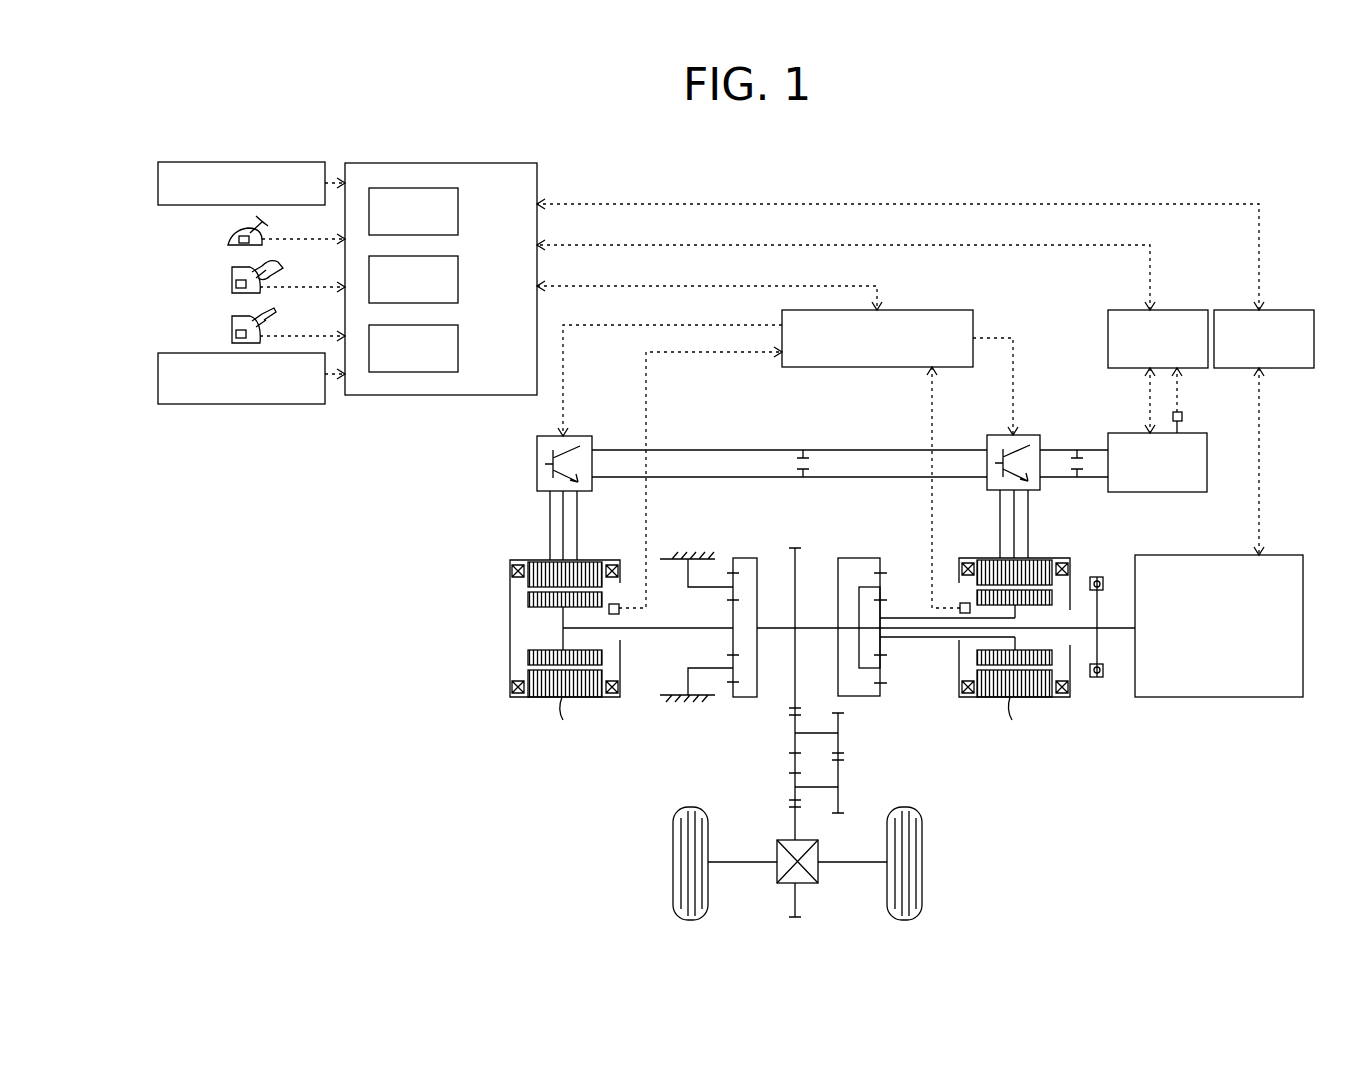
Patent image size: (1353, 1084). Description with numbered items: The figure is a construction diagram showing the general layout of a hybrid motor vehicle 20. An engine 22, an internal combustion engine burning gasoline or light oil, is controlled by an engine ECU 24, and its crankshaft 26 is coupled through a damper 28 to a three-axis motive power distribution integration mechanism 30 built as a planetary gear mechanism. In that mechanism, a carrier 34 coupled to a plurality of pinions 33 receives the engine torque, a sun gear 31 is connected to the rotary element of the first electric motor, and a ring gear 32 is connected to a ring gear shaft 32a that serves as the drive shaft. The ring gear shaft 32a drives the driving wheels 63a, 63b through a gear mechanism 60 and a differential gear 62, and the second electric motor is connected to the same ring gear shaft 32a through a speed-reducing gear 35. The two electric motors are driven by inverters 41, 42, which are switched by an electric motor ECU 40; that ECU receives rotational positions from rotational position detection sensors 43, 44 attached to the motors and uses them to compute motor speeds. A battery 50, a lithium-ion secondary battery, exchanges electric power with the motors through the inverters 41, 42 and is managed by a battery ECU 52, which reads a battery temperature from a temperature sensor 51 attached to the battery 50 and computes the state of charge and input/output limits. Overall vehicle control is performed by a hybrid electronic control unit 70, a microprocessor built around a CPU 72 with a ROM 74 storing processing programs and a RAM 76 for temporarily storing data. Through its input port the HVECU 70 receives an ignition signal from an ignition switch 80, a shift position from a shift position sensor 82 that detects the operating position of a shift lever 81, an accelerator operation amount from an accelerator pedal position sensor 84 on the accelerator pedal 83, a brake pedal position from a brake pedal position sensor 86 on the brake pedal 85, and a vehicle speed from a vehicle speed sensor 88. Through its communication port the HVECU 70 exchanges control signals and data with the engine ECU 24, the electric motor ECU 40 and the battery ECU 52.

The hybrid motor vehicle 20 is at (1043, 160).
The engine 22 is at (1222, 697).
The engine electronic control unit 24 is at (1284, 310).
The crankshaft 26 is at (1122, 630).
The damper 28 is at (1097, 678).
The motive power distribution integration mechanism 30 is at (926, 599).
The sun gear 31 is at (885, 646).
The ring gear 32 is at (885, 690).
The ring gear shaft 32a is at (816, 622).
The pinions 33 is at (885, 665).
The carrier 34 is at (860, 587).
The speed-reducing gear 35 is at (740, 535).
The electric-motor electronic control unit 40 is at (917, 310).
The inverter 41 is at (1022, 435).
The inverter 42 is at (572, 436).
The rotational position detection sensor 43 is at (963, 603).
The rotational position detection sensor 44 is at (615, 603).
The battery 50 is at (1147, 492).
The temperature sensor 51 is at (1184, 416).
The battery electronic control unit 52 is at (1177, 310).
The gear mechanism 60 is at (857, 770).
The differential gear 62 is at (818, 875).
The driving wheel 63a is at (673, 862).
The driving wheel 63b is at (922, 862).
The hybrid electronic control unit 70 is at (437, 163).
The CPU 72 is at (458, 208).
The ROM 74 is at (458, 277).
The RAM 76 is at (458, 346).
The ignition switch 80 is at (158, 176).
The shift lever 81 is at (258, 223).
The shift position sensor 82 is at (228, 240).
The accelerator pedal 83 is at (258, 270).
The accelerator pedal position sensor 84 is at (232, 286).
The brake pedal 85 is at (262, 318).
The brake pedal position sensor 86 is at (232, 336).
The vehicle speed sensor 88 is at (158, 366).